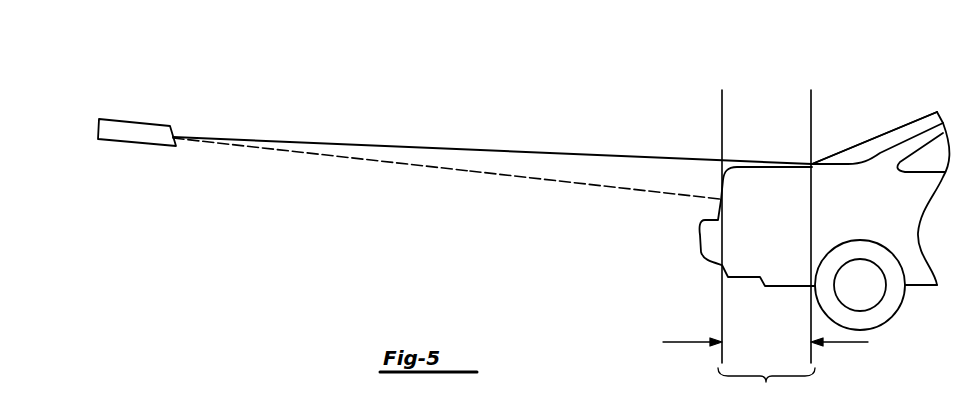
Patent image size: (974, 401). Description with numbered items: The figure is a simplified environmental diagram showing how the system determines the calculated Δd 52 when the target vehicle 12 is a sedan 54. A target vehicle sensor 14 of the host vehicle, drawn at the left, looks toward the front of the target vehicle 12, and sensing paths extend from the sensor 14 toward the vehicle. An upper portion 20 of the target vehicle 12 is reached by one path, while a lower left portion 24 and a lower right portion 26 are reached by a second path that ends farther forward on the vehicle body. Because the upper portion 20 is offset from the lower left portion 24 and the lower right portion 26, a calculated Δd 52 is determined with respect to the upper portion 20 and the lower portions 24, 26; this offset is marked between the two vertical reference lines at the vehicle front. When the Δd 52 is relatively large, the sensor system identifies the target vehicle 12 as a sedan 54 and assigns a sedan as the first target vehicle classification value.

The target vehicle 12 is at (856, 74).
The target vehicle sensor 14 is at (137, 122).
The upper portion 20 is at (512, 149).
The lower left portion 24 is at (395, 162).
The lower right portion 26 is at (580, 186).
The calculated Δd 52 is at (765, 245).
The sedan 54 is at (917, 113).